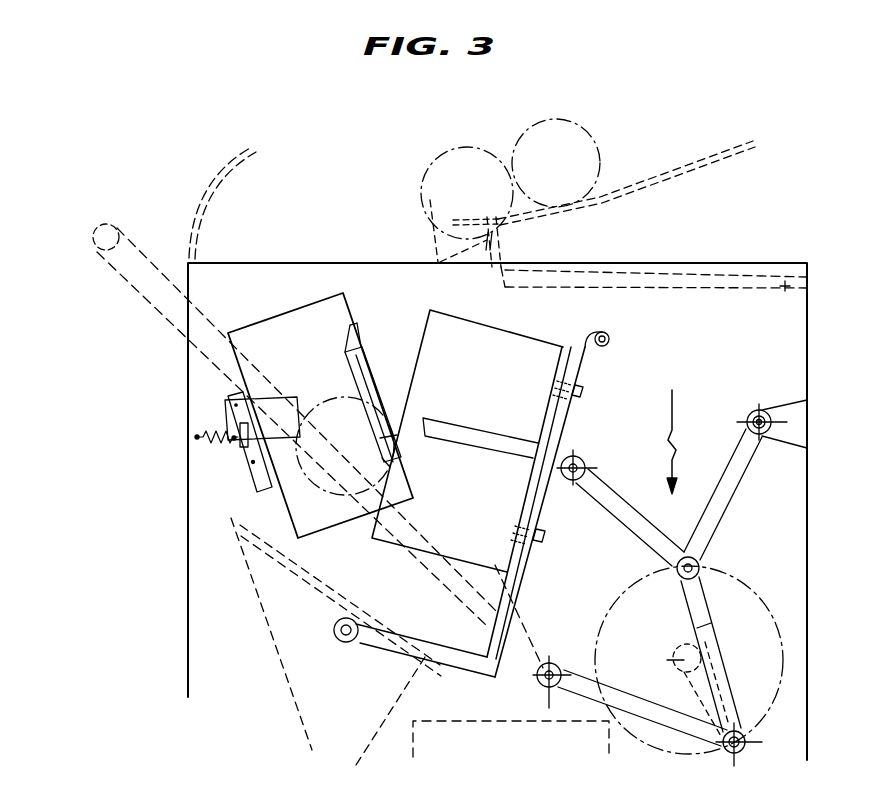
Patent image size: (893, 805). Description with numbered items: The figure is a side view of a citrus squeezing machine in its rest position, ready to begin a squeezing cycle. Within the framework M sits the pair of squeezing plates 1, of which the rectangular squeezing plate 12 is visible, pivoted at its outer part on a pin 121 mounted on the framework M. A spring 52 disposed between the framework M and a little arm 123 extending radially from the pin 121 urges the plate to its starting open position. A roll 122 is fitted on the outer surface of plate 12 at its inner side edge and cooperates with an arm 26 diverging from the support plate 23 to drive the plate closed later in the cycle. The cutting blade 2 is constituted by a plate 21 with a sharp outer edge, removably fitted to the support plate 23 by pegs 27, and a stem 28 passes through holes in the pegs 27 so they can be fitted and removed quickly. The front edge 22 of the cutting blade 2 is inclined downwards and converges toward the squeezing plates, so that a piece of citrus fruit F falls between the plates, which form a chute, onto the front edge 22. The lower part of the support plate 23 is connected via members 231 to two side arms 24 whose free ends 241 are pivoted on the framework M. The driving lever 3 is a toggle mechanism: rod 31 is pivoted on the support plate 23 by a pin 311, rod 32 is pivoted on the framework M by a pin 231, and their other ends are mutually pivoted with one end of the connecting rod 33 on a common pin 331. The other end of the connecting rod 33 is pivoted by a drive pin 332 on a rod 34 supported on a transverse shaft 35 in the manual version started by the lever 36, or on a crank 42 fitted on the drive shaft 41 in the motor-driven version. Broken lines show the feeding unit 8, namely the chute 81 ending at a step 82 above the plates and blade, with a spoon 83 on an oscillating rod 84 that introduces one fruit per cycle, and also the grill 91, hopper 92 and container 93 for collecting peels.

The pair of squeezing plates 1 is at (268, 306).
The cutting blade 2 is at (408, 308).
The driving lever 3 is at (669, 428).
The feeding unit 8 is at (438, 130).
The squeezing plate 12 is at (300, 488).
The plate 21 is at (482, 340).
The front edge 22 is at (408, 385).
The support plate 23 is at (566, 410).
The side arms 24 is at (440, 655).
The arm 26 is at (483, 440).
The pegs 27 is at (592, 387).
The stem 28 is at (614, 341).
The rod 31 is at (628, 500).
The rod 32 is at (736, 505).
The connecting rod 33 is at (714, 646).
The rod 34 is at (636, 706).
The transverse shaft 35 is at (542, 690).
The lever 36 is at (140, 299).
The drive shaft 41 is at (688, 650).
The crank 42 is at (684, 700).
The spring 52 is at (205, 430).
The chute 81 is at (685, 175).
The step 82 is at (428, 247).
The spoon 83 is at (502, 218).
The oscillating rod 84 is at (645, 290).
The grill 91 is at (325, 575).
The hopper 92 is at (278, 661).
The container 93 is at (459, 712).
The pin 121 is at (253, 476).
The roll 122 is at (376, 398).
The little arm 123 is at (232, 450).
The member 231 is at (755, 406).
The free ends 241 is at (340, 648).
The pin 311 is at (590, 468).
The common pin 331 is at (706, 553).
The drive pin 332 is at (738, 760).
The framework M is at (188, 573).
The piece of citrus fruit F is at (346, 395).